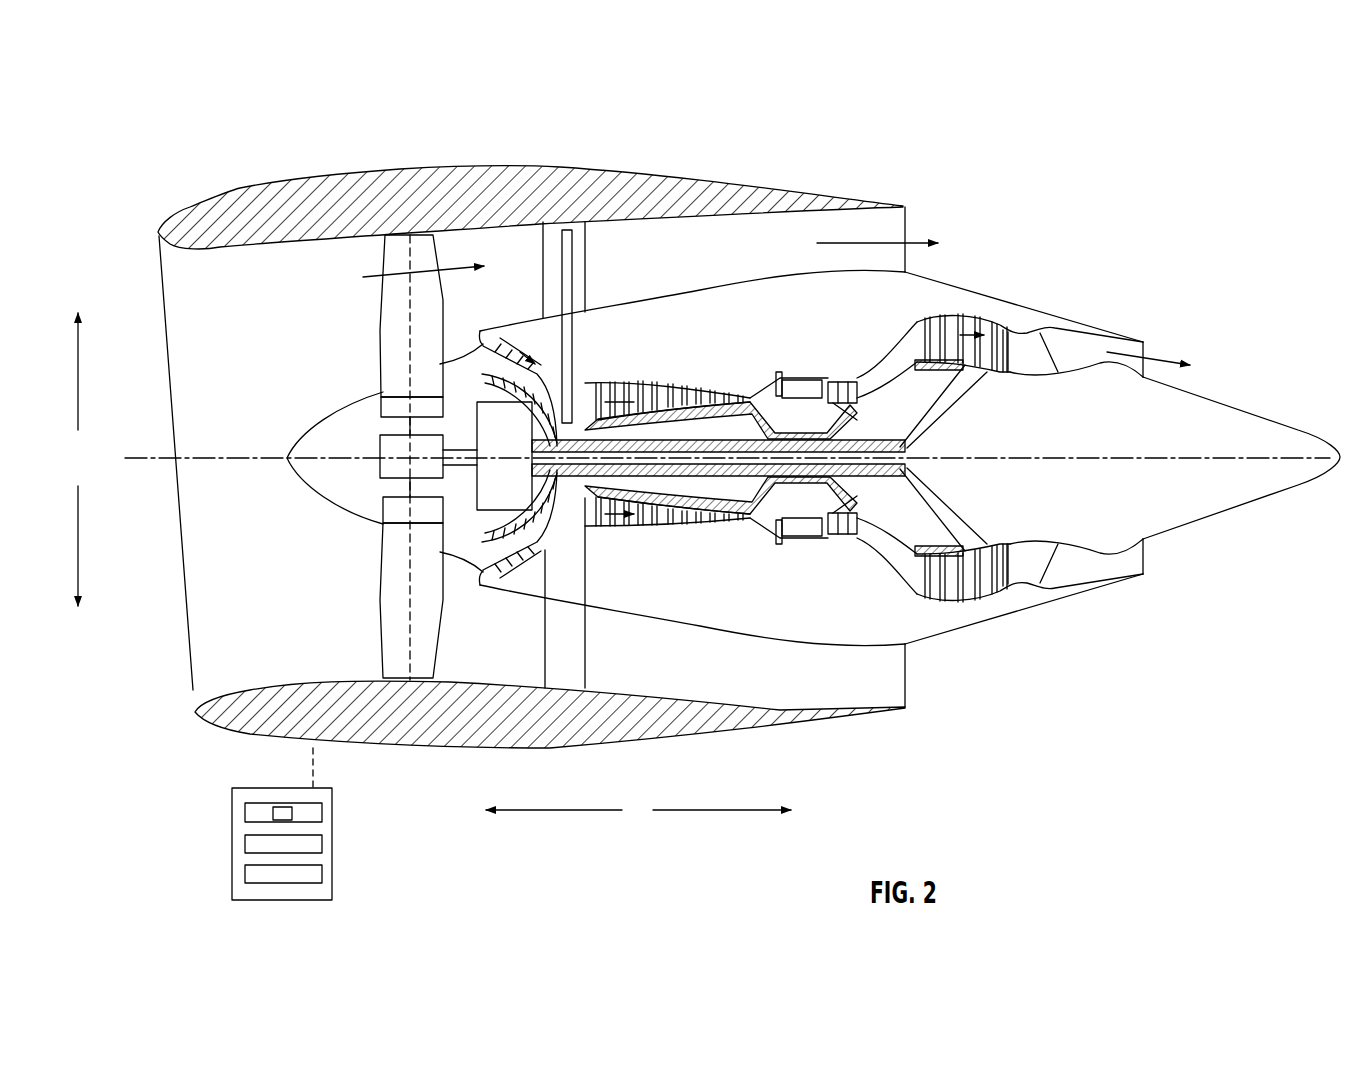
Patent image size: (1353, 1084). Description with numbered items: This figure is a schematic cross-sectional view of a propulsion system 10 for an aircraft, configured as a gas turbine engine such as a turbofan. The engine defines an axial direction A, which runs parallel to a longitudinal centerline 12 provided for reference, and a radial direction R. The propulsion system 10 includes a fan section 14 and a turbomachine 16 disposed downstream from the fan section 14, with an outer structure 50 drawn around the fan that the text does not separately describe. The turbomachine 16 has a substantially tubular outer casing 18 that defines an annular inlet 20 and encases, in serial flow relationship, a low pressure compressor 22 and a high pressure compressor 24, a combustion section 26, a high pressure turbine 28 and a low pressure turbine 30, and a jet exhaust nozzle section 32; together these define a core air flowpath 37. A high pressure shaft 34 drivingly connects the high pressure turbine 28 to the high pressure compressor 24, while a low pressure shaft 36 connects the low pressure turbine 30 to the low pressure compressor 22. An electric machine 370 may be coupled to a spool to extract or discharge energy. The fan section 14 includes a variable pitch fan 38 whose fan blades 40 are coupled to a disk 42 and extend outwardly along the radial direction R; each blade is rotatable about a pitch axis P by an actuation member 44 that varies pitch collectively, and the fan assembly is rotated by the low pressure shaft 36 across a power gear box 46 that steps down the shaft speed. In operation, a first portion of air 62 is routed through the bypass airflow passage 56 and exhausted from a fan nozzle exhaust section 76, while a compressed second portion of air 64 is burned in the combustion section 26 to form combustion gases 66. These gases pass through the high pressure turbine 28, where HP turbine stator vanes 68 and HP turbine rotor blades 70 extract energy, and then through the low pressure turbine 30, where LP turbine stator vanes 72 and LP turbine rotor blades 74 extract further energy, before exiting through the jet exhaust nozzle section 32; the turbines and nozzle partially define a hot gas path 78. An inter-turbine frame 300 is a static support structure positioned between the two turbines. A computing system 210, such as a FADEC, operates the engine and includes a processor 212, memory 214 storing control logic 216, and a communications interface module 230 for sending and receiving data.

The propulsion system 10 is at (1060, 172).
The longitudinal centerline 12 is at (1097, 458).
The fan section 14 is at (410, 132).
The turbomachine 16 is at (764, 337).
The outer casing 18 is at (753, 631).
The annular inlet 20 is at (487, 570).
The low pressure compressor 22 is at (552, 544).
The high pressure compressor 24 is at (613, 527).
The combustion section 26 is at (796, 537).
The high pressure turbine 28 is at (895, 493).
The low pressure turbine 30 is at (1001, 500).
The jet exhaust nozzle section 32 is at (1062, 573).
The high pressure shaft 34 is at (812, 430).
The low pressure shaft 36 is at (912, 437).
The core air flowpath 37 is at (875, 552).
The variable pitch fan 38 is at (368, 394).
The fan blades 40 is at (383, 617).
The disk 42 is at (400, 410).
The actuation member 44 is at (382, 435).
The power gear box 46 is at (513, 418).
The nacelle 50 is at (462, 748).
The bypass airflow passage 56 is at (740, 262).
The first portion of air 62 is at (390, 277).
The second portion of air 64 is at (468, 347).
The combustion gases 66 is at (950, 337).
The HP turbine stator vanes 68 is at (820, 528).
The HP turbine rotor blades 70 is at (833, 518).
The LP turbine stator vanes 72 is at (910, 572).
The LP turbine rotor blades 74 is at (922, 583).
The fan nozzle exhaust section 76 is at (893, 227).
The hot gas path 78 is at (897, 352).
The inter-turbine frame 300 is at (880, 333).
The electric machine 370 is at (545, 267).
The computing system 210 is at (292, 826).
The processor 212 is at (322, 843).
The memory 214 is at (322, 813).
The control logic 216 is at (272, 812).
The communications interface module 230 is at (322, 877).
The pitch axis P is at (423, 250).
The radial direction R is at (78, 459).
The axial direction A is at (638, 811).